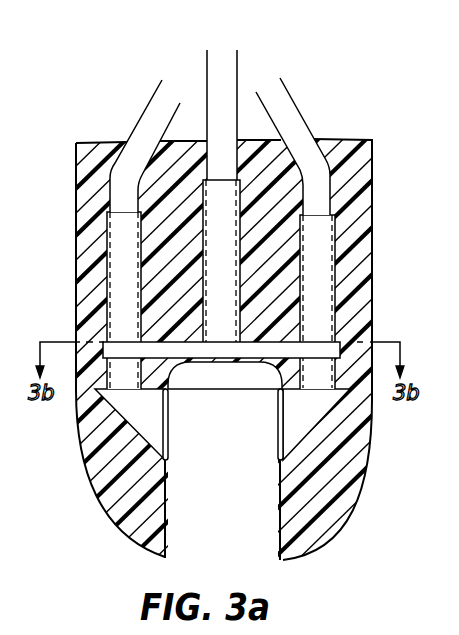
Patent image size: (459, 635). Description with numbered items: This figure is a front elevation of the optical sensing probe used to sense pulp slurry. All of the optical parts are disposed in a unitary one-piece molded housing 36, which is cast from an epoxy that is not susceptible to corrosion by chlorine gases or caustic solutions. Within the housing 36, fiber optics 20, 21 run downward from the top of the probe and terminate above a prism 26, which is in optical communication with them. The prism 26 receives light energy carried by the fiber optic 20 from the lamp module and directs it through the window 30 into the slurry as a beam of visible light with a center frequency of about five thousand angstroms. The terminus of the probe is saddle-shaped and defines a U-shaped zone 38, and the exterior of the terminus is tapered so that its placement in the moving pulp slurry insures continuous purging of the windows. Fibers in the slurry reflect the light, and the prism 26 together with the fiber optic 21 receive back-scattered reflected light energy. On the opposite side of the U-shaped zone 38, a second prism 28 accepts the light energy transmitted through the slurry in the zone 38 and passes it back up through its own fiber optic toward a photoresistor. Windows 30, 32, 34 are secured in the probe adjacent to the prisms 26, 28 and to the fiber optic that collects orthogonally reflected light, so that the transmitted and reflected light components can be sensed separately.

The fiber optic 20 is at (120, 278).
The fiber optic 21 is at (122, 240).
The prism 26 is at (140, 428).
The prism 28 is at (331, 400).
The window 30 is at (173, 443).
The window 32 is at (277, 433).
The window 34 is at (225, 364).
The unitary one-piece molded housing 36 is at (363, 168).
The U-shaped zone 38 is at (220, 480).